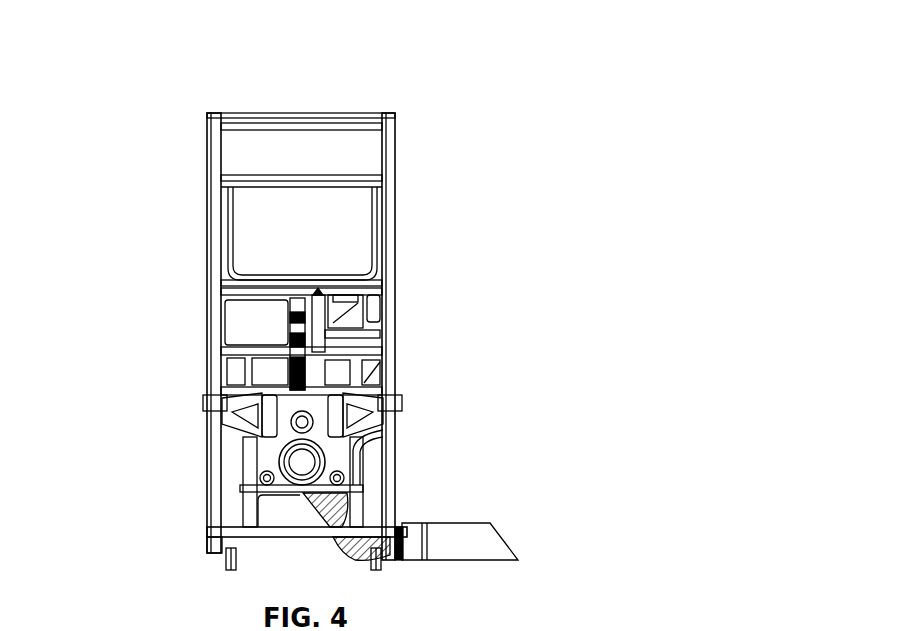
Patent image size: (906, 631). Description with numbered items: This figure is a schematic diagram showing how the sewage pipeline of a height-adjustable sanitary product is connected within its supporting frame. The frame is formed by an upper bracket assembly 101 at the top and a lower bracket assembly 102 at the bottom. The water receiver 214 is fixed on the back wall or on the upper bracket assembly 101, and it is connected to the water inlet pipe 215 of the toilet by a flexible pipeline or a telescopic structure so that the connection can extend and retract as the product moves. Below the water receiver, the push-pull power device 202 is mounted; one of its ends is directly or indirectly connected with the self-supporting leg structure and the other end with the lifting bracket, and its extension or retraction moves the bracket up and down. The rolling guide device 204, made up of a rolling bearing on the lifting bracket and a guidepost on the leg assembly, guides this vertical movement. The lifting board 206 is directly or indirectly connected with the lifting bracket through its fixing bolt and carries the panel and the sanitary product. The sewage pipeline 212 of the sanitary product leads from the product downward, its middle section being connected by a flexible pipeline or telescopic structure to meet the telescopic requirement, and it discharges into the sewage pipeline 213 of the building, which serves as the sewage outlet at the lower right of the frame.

The upper bracket assembly 101 is at (217, 197).
The lower bracket assembly 102 is at (213, 493).
The push-pull power device 202 is at (370, 292).
The rolling guide device 204 is at (350, 380).
The lifting board 206 is at (270, 460).
The sewage pipeline of sanitary product 212 is at (365, 470).
The sewage pipeline of building 213 is at (448, 545).
The water receiver 214 is at (302, 232).
The water inlet pipe of sanitary product 215 is at (278, 352).